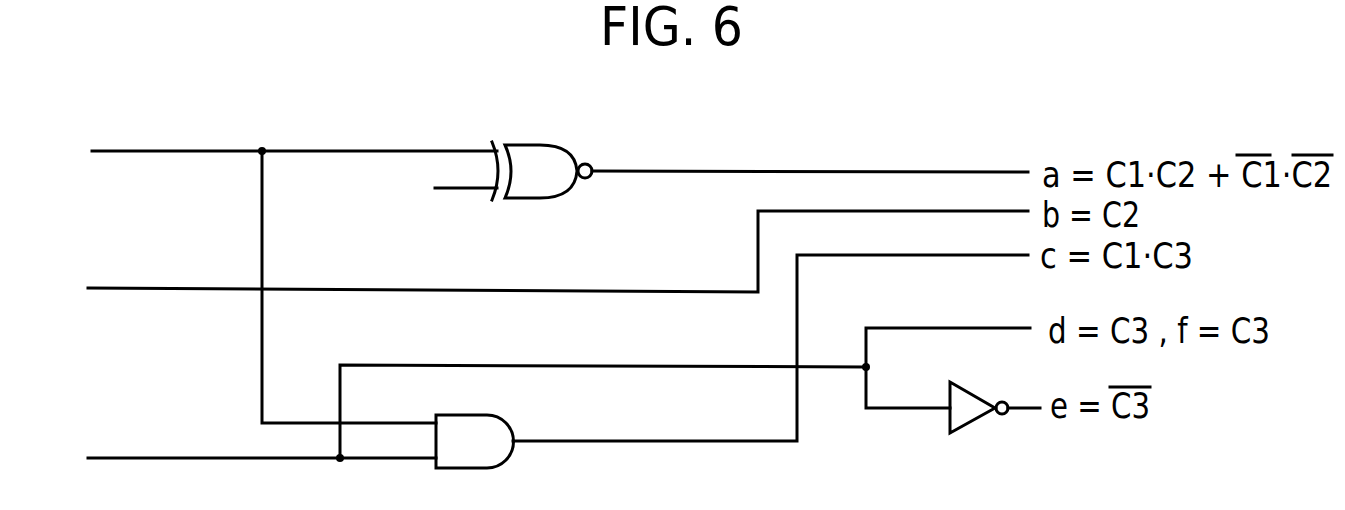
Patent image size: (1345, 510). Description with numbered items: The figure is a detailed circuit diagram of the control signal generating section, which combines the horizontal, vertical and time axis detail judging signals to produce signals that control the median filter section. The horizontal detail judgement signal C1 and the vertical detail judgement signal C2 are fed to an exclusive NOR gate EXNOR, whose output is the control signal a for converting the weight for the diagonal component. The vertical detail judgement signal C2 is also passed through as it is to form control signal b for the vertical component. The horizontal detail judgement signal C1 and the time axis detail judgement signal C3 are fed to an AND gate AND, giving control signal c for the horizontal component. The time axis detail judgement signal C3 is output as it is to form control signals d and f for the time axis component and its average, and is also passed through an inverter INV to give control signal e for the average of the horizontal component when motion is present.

The horizontal detail judgement signal C1 is at (268, 278).
The vertical detail judgement signal C2 is at (534, 259).
The time axis detail judgement signal C3 is at (535, 401).
The exclusive NOR gate EXNOR is at (557, 148).
The AND gate AND is at (505, 420).
The inverter INV is at (950, 388).